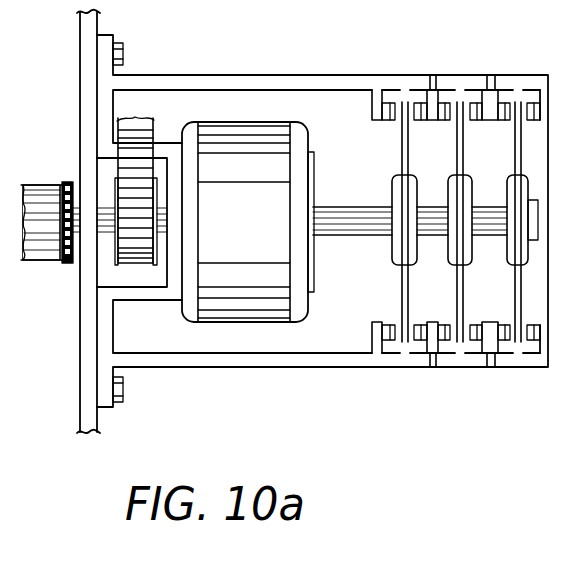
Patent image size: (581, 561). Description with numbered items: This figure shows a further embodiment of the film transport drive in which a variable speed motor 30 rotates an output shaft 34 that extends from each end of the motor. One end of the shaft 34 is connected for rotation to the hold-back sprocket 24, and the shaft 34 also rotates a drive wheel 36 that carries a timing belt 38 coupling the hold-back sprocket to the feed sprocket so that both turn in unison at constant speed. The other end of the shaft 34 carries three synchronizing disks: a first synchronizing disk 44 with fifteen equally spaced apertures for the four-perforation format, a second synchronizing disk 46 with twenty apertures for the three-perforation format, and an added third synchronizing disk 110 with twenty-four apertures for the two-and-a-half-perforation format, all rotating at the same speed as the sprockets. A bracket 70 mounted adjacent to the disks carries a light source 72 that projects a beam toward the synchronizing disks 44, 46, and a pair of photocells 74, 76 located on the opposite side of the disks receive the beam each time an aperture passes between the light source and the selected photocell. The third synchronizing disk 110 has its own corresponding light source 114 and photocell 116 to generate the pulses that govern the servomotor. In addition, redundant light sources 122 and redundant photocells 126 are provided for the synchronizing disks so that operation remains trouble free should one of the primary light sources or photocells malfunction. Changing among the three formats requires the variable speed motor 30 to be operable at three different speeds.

The hold-back sprocket 24 is at (36, 200).
The variable speed motor 30 is at (257, 312).
The output shaft 34 is at (337, 232).
The drive wheel 36 is at (110, 262).
The timing belt 38 is at (137, 125).
The first synchronizing disk 44 is at (518, 170).
The second synchronizing disk 46 is at (458, 170).
The bracket 70 is at (268, 362).
The light source 72 is at (500, 326).
The photocell 74 is at (537, 333).
The photocell 76 is at (437, 343).
The third synchronizing disk 110 is at (403, 168).
The light source 114 is at (425, 333).
The photocell 116 is at (388, 333).
The redundant light source 122 is at (428, 92).
The redundant photocell 126 is at (386, 93).